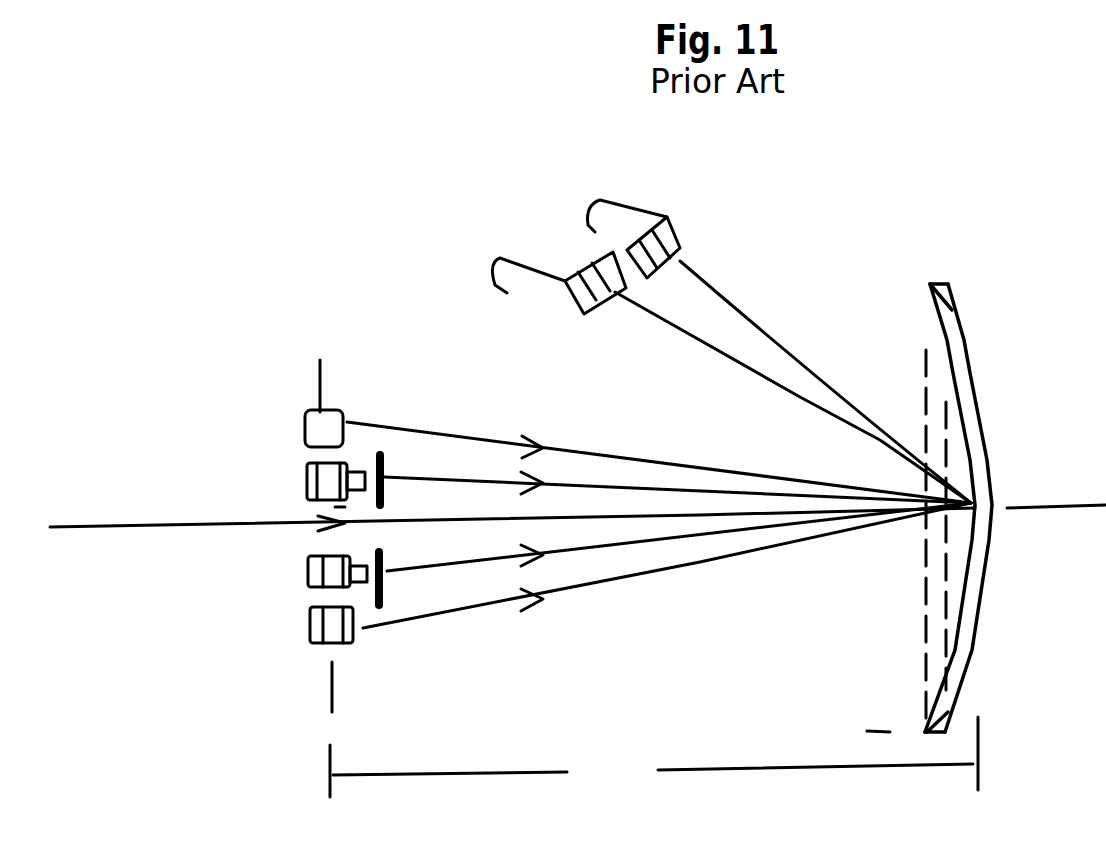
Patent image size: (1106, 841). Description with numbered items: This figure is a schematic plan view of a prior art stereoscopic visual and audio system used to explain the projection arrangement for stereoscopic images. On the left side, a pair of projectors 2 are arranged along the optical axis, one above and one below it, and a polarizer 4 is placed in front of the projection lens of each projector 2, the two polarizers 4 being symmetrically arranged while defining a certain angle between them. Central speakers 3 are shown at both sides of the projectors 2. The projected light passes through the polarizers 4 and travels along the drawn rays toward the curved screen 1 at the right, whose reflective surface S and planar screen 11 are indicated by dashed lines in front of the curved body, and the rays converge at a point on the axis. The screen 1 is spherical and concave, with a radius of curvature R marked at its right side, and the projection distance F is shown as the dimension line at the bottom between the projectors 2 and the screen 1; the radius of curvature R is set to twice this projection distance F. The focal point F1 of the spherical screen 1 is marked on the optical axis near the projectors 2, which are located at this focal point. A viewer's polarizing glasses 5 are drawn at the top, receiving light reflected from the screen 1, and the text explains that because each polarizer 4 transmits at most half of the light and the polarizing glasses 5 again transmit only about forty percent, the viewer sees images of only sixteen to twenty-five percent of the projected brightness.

The spherical screen 1 is at (953, 296).
The projector 2 is at (307, 484).
The central speaker 3 is at (343, 412).
The polarizer 4 is at (383, 460).
The polarizing glasses 5 is at (687, 225).
The planar screen 11 is at (930, 357).
The surface of the screen S is at (947, 392).
The radius of curvature R is at (997, 460).
The projection distance F is at (654, 765).
The focal point F1 is at (310, 537).